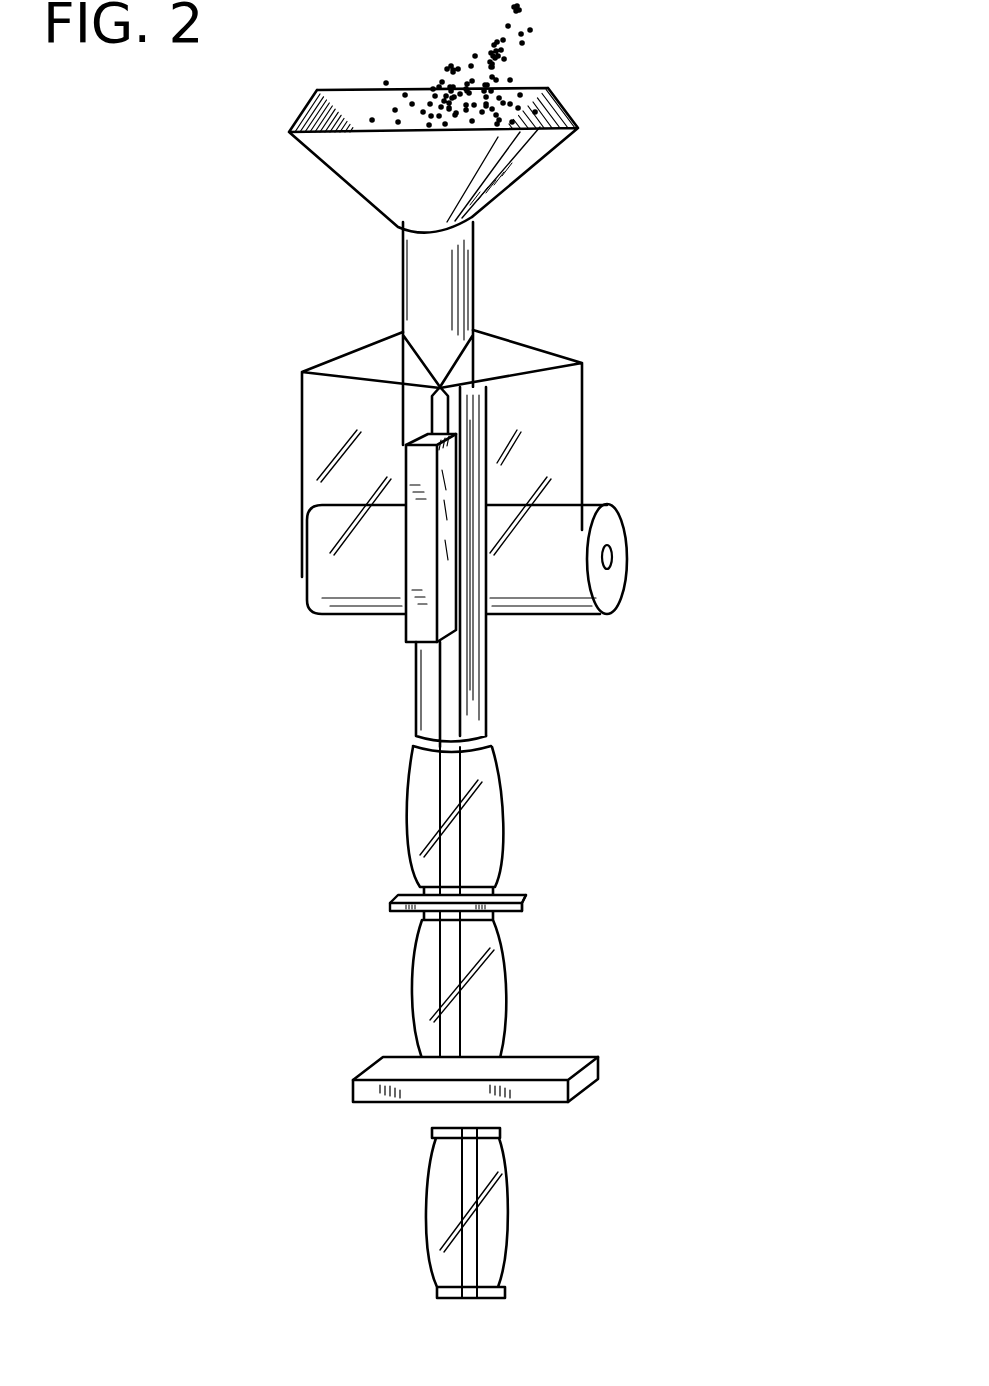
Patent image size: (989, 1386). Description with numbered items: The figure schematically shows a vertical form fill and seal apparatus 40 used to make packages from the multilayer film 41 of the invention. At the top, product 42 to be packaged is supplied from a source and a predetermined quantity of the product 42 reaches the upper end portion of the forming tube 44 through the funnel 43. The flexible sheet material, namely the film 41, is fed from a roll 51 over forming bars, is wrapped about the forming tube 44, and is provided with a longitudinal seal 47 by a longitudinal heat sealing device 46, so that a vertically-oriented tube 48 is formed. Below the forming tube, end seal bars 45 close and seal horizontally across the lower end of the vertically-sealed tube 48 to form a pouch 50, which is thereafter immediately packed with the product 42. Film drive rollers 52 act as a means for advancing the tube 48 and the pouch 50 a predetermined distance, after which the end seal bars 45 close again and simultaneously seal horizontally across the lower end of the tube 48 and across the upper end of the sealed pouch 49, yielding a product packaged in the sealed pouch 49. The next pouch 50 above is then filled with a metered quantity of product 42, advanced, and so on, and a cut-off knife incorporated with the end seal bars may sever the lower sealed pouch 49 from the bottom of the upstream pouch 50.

The vertical form fill and seal apparatus 40 is at (347, 299).
The multilayer film 41 is at (560, 425).
The product 42 is at (511, 41).
The funnel 43 is at (513, 187).
The forming tube 44 is at (460, 295).
The end seal bars 45 is at (567, 1060).
The longitudinal heat sealing device 46 is at (417, 555).
The longitudinal seal 47 is at (448, 680).
The vertically-oriented tube 48 is at (476, 684).
The sealed pouch 49 is at (497, 1203).
The pouch 50 is at (492, 987).
The roll 51 is at (607, 525).
The film drive rollers 52 is at (398, 901).